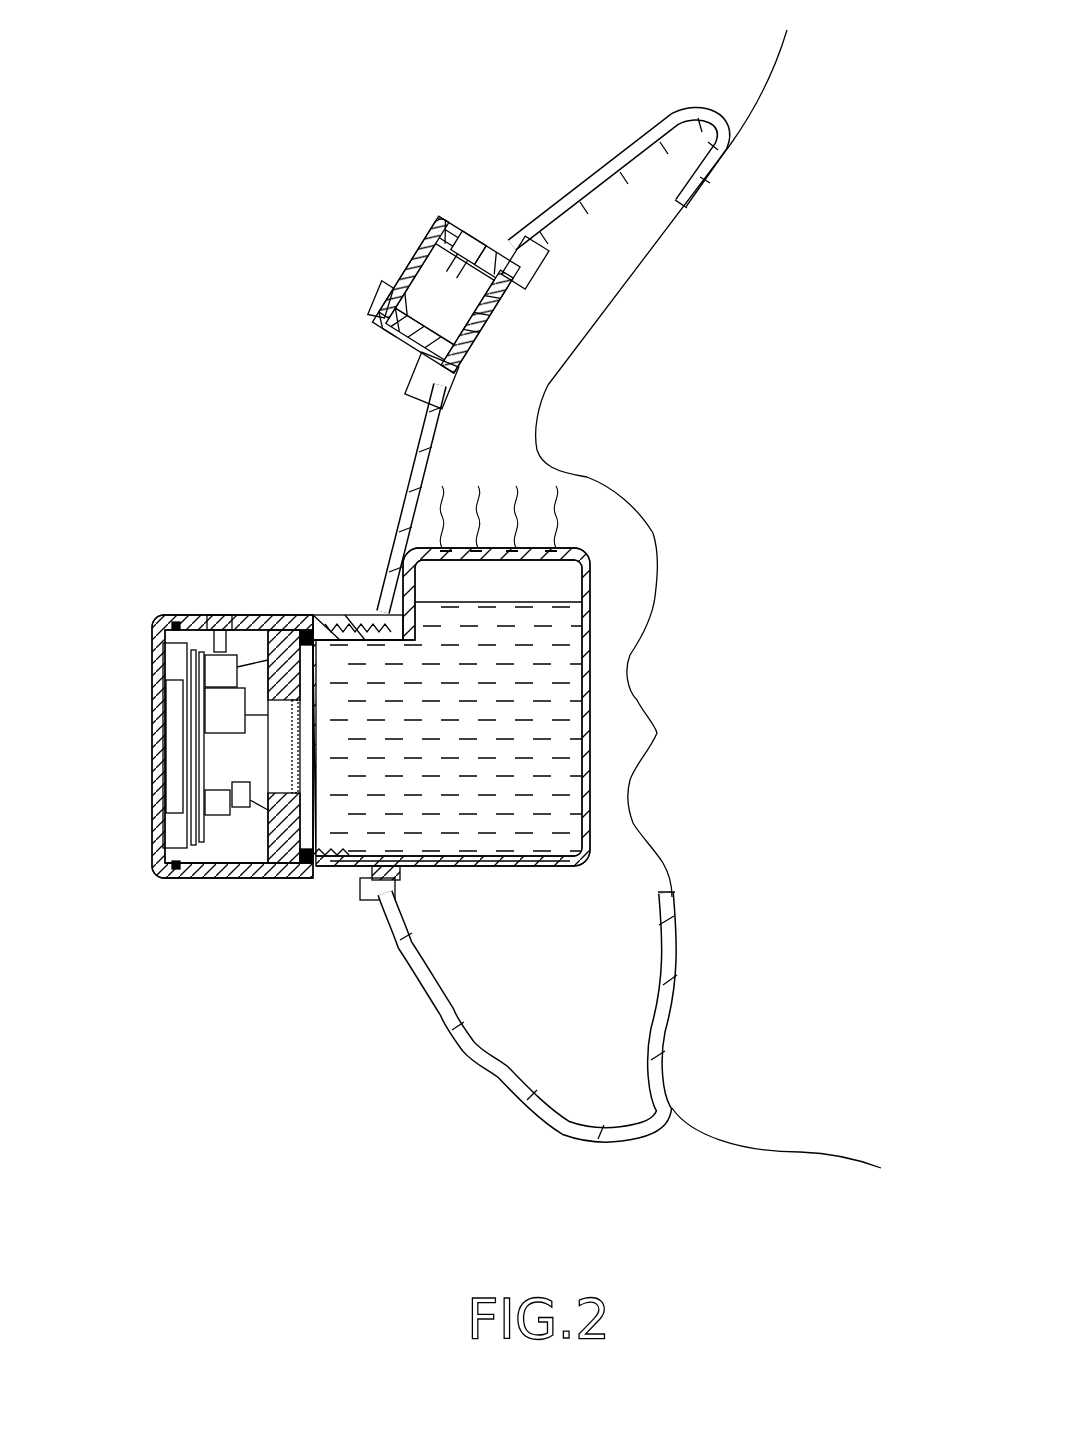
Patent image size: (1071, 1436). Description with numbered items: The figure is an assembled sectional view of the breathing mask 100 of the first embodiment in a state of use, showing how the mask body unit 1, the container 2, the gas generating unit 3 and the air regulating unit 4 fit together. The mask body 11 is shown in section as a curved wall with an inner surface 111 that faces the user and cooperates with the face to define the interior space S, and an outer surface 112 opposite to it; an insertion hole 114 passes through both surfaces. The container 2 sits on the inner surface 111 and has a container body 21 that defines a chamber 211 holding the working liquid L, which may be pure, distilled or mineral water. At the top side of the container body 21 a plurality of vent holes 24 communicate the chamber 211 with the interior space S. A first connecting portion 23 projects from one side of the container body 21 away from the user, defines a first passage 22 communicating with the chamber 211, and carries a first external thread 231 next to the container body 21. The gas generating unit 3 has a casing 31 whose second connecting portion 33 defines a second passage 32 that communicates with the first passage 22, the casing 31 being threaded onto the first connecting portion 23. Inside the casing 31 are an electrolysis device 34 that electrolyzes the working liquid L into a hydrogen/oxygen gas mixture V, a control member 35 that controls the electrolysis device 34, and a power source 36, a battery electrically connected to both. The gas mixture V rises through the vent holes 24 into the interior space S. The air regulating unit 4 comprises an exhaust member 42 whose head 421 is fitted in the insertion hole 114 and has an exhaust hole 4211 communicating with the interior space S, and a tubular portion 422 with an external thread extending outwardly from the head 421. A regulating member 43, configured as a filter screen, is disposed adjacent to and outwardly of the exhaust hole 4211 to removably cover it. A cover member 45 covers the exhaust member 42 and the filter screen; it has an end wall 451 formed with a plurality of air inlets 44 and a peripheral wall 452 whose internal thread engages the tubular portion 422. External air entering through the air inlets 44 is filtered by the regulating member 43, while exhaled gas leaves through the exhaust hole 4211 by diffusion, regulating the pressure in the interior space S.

The breathing mask 100 is at (563, 108).
The mask body unit 1 is at (418, 1030).
The mask body 11 is at (568, 180).
The inner surface 111 is at (593, 193).
The outer surface 112 is at (620, 145).
The insertion hole 114 is at (462, 385).
The container 2 is at (604, 757).
The container body 21 is at (543, 868).
The chamber 211 is at (588, 580).
The first passage 22 is at (352, 655).
The first connecting portion 23 is at (312, 628).
The first external thread 231 is at (376, 900).
The vent holes 24 is at (565, 550).
The gas generating unit 3 is at (152, 592).
The casing 31 is at (207, 880).
The second passage 32 is at (333, 860).
The second connecting portion 33 is at (395, 862).
The electrolysis device 34 is at (255, 762).
The control member 35 is at (216, 612).
The power source 36 is at (180, 748).
The air regulating unit 4 is at (408, 215).
The exhaust member 42 is at (388, 366).
The head 421 is at (538, 290).
The exhaust hole 4211 is at (500, 342).
The tubular portion 422 is at (480, 250).
The regulating member 43 is at (525, 310).
The air inlets 44 is at (450, 258).
The cover member 45 is at (362, 320).
The end wall 451 is at (385, 302).
The peripheral wall 452 is at (395, 352).
The interior space S is at (668, 165).
The working liquid L is at (545, 660).
The hydrogen/oxygen gas mixture V is at (412, 490).